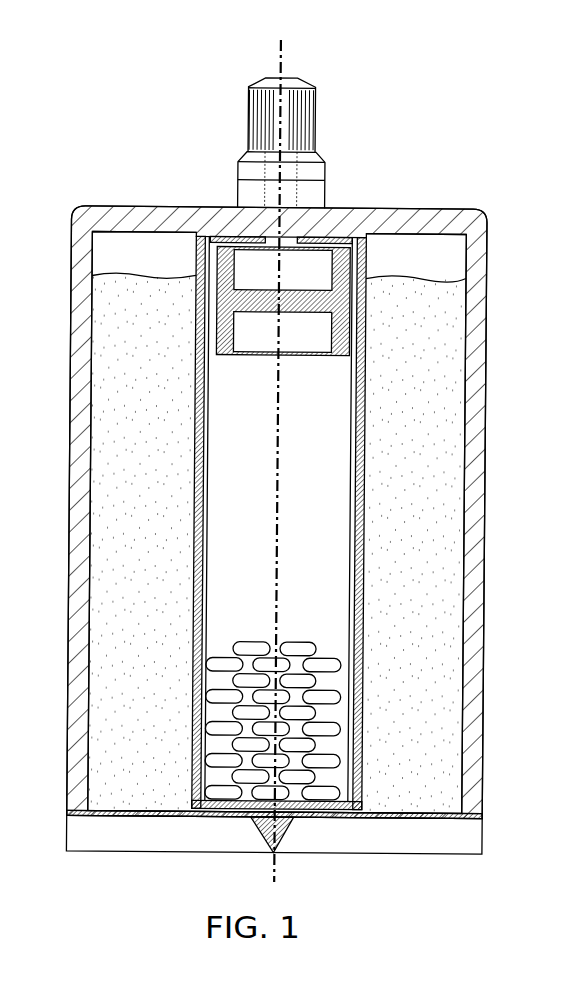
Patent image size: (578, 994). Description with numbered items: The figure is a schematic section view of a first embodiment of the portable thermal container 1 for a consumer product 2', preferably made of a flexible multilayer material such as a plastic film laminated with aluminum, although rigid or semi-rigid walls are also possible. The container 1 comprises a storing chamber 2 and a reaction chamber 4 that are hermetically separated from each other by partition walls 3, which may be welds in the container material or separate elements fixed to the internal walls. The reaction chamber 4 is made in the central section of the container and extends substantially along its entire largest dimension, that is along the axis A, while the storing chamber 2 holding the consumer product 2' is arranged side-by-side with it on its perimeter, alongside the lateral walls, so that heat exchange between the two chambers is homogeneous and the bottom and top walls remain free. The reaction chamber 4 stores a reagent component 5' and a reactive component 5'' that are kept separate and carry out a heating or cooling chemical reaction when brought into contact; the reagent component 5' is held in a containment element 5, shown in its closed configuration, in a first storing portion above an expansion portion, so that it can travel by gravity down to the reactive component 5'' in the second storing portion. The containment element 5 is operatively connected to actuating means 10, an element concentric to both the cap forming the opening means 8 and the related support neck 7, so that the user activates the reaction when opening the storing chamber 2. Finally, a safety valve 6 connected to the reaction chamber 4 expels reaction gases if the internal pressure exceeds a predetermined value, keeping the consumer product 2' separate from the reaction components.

The portable thermal container 1 is at (366, 212).
The storing chamber 2 is at (251, 504).
The consumer product 2' is at (243, 533).
The partition walls 3 is at (359, 503).
The reaction chamber 4 is at (338, 427).
The containment element 5 is at (188, 337).
The reagent component 5' is at (282, 332).
The reactive component 5'' is at (366, 717).
The safety valve 6 is at (276, 852).
The support neck 7 is at (244, 190).
The opening means 8 is at (316, 122).
The actuating means 10 is at (282, 75).